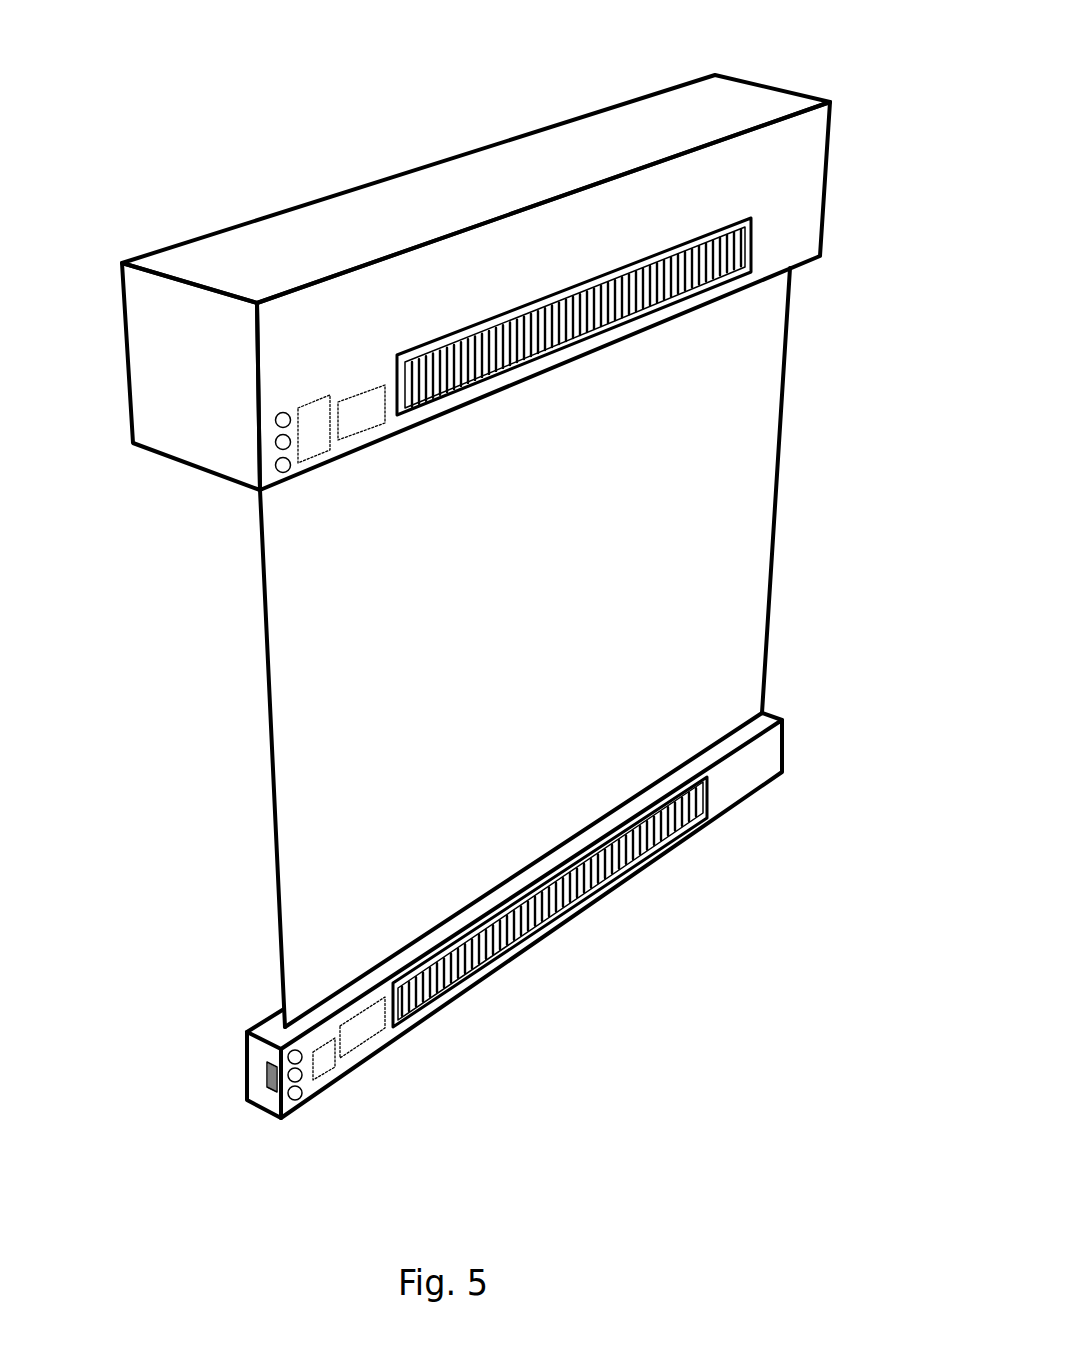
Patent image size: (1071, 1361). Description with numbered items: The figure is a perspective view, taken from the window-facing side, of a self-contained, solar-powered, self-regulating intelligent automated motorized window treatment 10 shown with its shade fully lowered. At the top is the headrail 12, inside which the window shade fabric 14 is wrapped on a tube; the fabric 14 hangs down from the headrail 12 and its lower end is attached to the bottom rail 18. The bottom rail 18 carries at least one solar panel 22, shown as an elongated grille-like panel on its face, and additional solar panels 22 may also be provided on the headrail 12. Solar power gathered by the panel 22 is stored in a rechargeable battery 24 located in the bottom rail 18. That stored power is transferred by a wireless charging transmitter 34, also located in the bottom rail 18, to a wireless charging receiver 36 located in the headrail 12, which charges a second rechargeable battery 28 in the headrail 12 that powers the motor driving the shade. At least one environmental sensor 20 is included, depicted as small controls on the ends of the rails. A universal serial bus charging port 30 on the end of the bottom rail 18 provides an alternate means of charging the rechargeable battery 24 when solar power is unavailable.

The automated motorized window treatment 10 is at (692, 887).
The headrail 12 is at (832, 140).
The window shade fabric 14 is at (707, 592).
The bottom rail 18 is at (707, 793).
The environmental sensor 20 is at (294, 1040).
The solar panel 22 is at (710, 296).
The rechargeable battery 24 is at (352, 1036).
The rechargeable battery 28 is at (353, 418).
The USB charging port 30 is at (272, 1080).
The wireless charging transmitter 34 is at (322, 1058).
The wireless charging receiver 36 is at (308, 418).